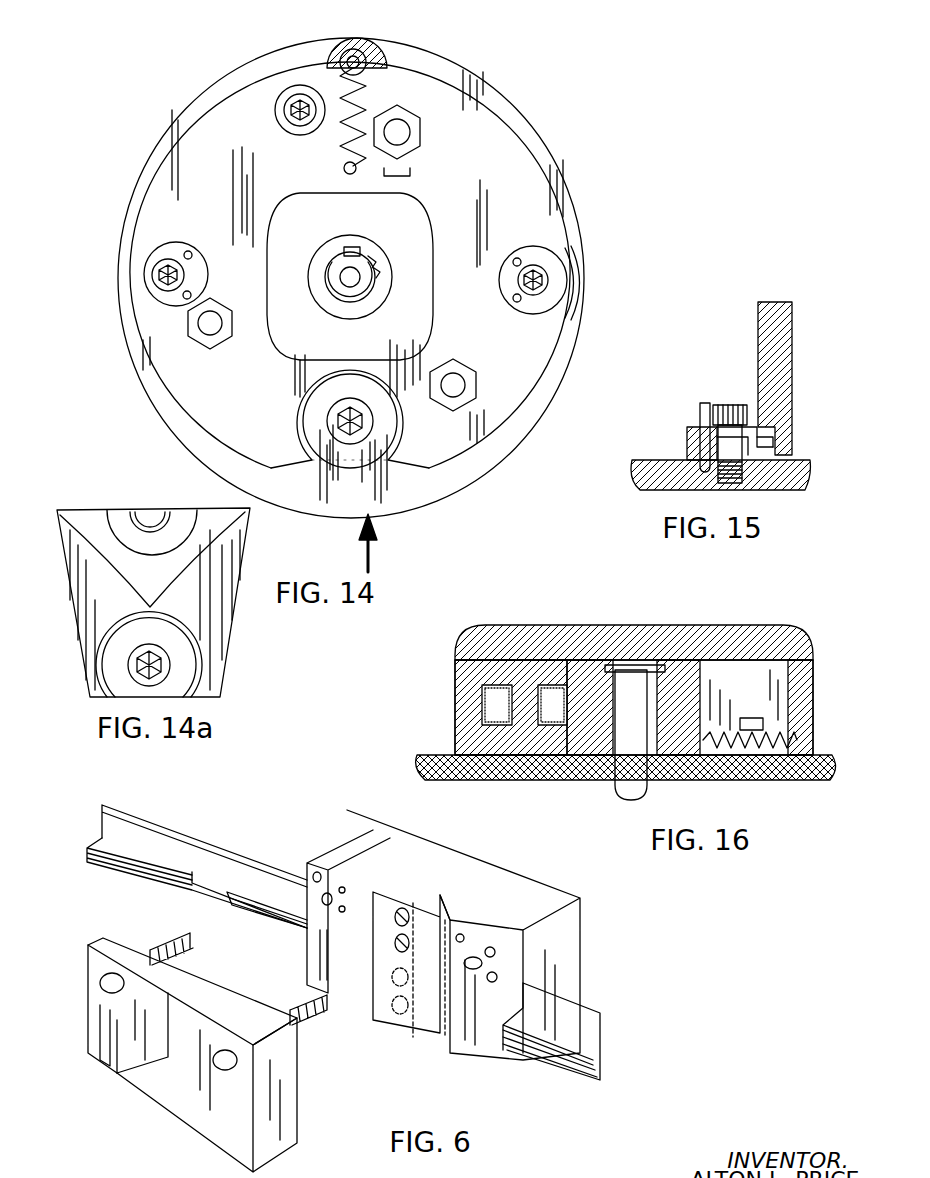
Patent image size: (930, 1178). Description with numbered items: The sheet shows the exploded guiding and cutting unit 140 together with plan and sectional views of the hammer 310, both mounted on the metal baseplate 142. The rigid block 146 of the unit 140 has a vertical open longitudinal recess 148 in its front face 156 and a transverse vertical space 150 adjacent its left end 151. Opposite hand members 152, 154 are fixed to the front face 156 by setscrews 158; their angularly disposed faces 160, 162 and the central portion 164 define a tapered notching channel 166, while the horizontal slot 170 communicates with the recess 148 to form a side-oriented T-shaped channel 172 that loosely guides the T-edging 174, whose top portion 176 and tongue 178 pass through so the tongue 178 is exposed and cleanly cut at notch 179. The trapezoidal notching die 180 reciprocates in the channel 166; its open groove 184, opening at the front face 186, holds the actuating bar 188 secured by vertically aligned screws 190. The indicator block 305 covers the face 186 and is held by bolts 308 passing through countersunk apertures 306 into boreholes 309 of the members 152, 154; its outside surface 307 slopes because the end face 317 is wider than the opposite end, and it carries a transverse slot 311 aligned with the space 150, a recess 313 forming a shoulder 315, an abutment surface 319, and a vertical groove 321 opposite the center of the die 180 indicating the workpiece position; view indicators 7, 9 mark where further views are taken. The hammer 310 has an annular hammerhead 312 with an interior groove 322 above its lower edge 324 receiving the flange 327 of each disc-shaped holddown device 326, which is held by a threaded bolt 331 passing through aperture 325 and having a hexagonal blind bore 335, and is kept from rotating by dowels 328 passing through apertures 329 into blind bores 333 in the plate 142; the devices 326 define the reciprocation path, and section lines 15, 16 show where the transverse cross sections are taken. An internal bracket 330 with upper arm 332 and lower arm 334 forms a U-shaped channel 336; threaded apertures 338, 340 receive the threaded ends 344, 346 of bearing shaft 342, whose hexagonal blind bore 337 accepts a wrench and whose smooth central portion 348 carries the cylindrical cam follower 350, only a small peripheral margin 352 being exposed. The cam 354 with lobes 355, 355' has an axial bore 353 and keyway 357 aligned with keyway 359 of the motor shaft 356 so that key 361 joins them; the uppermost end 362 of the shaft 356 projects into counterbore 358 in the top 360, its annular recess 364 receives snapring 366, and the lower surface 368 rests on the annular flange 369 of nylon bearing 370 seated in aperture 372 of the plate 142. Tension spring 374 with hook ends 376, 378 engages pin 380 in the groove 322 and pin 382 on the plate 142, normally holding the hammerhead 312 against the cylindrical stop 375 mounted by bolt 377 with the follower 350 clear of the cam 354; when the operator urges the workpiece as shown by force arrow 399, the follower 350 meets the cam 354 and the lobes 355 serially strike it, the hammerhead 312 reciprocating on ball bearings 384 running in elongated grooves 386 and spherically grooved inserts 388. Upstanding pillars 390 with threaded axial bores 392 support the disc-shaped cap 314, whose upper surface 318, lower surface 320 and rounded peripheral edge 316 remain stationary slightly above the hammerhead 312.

In FIG. 6, the guiding and cutting unit 140 is at (596, 906).
In FIG. 14, the metal baseplate 142 is at (186, 207).
In FIG. 14A, the metal baseplate 142 is at (76, 521).
In FIG. 15, the metal baseplate 142 is at (660, 476).
In FIG. 16, the metal baseplate 142 is at (430, 766).
In FIG. 6, the rigid block 146 is at (541, 896).
In FIG. 6, the open longitudinal recess 148 is at (526, 986).
In FIG. 6, the transverse vertical space 150 is at (320, 961).
In FIG. 6, the left end 151 is at (360, 831).
In FIG. 6, the opposite hand member 152 is at (328, 858).
In FIG. 6, the opposite hand member 154 is at (482, 1056).
In FIG. 6, the front face 156 is at (458, 923).
In FIG. 6, the setscrews 158 is at (338, 888).
In FIG. 6, the angularly disposed face 160 is at (365, 1006).
In FIG. 6, the angularly disposed face 162 is at (470, 1061).
In FIG. 6, the central portion 164 is at (455, 1041).
In FIG. 6, the tapered notching channel 166 is at (526, 931).
In FIG. 6, the transverse horizontal slot 170 is at (505, 1061).
In FIG. 6, the T-shaped through-channel 172 is at (525, 1071).
In FIG. 6, the T-edging 174 is at (607, 1034).
In FIG. 6, the top portion 176 is at (160, 808).
In FIG. 6, the tongue 178 is at (100, 876).
In FIG. 6, the notch 179 is at (195, 871).
In FIG. 6, the notching die 180 is at (441, 906).
In FIG. 6, the open groove 184 is at (405, 901).
In FIG. 6, the front face 186 is at (320, 939).
In FIG. 6, the actuating bar 188 is at (395, 1011).
In FIG. 6, the screws 190 is at (388, 901).
In FIG. 6, the indicator block 305 is at (280, 1150).
In FIG. 6, the countersunk apertures 306 is at (105, 978).
In FIG. 6, the outside surface 307 is at (195, 1001).
In FIG. 6, the bolts 308 is at (160, 946).
In FIG. 6, the boreholes 309 is at (318, 876).
In FIG. 14, the hammer 310 is at (515, 99).
In FIG. 16, the hammer 310 is at (699, 624).
In FIG. 6, the transverse slot 311 is at (108, 1076).
In FIG. 14, the hammerhead 312 is at (568, 226).
In FIG. 15, the hammerhead 312 is at (758, 319).
In FIG. 16, the hammerhead 312 is at (800, 651).
In FIG. 6, the recess 313 is at (185, 1121).
In FIG. 16, the cap 314 is at (560, 663).
In FIG. 6, the shoulder 315 is at (160, 1106).
In FIG. 16, the rounded peripheral edge 316 is at (458, 631).
In FIG. 6, the end face 317 is at (268, 1131).
In FIG. 16, the upper surface 318 is at (612, 663).
In FIG. 6, the abutment surface 319 is at (92, 943).
In FIG. 16, the lower surface 320 is at (761, 656).
In FIG. 6, the vertical groove 321 is at (135, 1091).
In FIG. 14, the annular groove 322 is at (378, 60).
In FIG. 15, the annular groove 322 is at (786, 430).
In FIG. 16, the annular groove 322 is at (808, 776).
In FIG. 15, the lower edge 324 is at (780, 479).
In FIG. 16, the lower edge 324 is at (500, 766).
In FIG. 15, the aperture 325 is at (756, 486).
In FIG. 14, the holddown device 326 is at (181, 251).
In FIG. 15, the holddown device 326 is at (688, 441).
In FIG. 14, the flange 327 is at (548, 262).
In FIG. 15, the flange 327 is at (775, 433).
In FIG. 14, the dowels 328 is at (192, 259).
In FIG. 15, the dowels 328 is at (703, 411).
In FIG. 15, the aperture 329 is at (700, 451).
In FIG. 14, the bracket 330 is at (315, 415).
In FIG. 14A, the bracket 330 is at (186, 678).
In FIG. 16, the bracket 330 is at (500, 679).
In FIG. 14, the threaded bolt 331 is at (165, 276).
In FIG. 15, the threaded bolt 331 is at (730, 405).
In FIG. 16, the upper arm 332 is at (548, 666).
In FIG. 15, the blind bore 333 is at (690, 483).
In FIG. 16, the lower arm 334 is at (575, 763).
In FIG. 14, the hexagonal blind bore 335 is at (168, 281).
In FIG. 16, the U-shaped channel 336 is at (470, 726).
In FIG. 14, the hexagonal blind bore 337 is at (360, 441).
In FIG. 16, the hexagonal blind bore 337 is at (520, 661).
In FIG. 16, the threaded aperture 338 is at (521, 666).
In FIG. 16, the threaded aperture 340 is at (535, 763).
In FIG. 14, the bearing shaft 342 is at (350, 437).
In FIG. 16, the bearing shaft 342 is at (535, 671).
In FIG. 16, the threaded end 344 is at (465, 669).
In FIG. 16, the threaded end 346 is at (548, 762).
In FIG. 16, the smooth central portion 348 is at (482, 701).
In FIG. 14, the cam follower 350 is at (404, 438).
In FIG. 14A, the cam follower 350 is at (198, 658).
In FIG. 16, the cam follower 350 is at (465, 719).
In FIG. 14, the peripheral margin 352 is at (300, 402).
In FIG. 14A, the peripheral margin 352 is at (196, 636).
In FIG. 16, the peripheral margin 352 is at (545, 665).
In FIG. 16, the axial bore 353 is at (633, 801).
In FIG. 14, the cam 354 is at (360, 344).
In FIG. 14A, the cam 354 is at (168, 580).
In FIG. 16, the cam 354 is at (592, 662).
In FIG. 14, the lobes 355 is at (347, 287).
In FIG. 14A, the lobes 355 is at (123, 577).
In FIG. 14, the hub plate edge 355' is at (451, 202).
In FIG. 16, the motor shaft 356 is at (650, 776).
In FIG. 14, the keyway 357 is at (380, 263).
In FIG. 16, the keyway 357 is at (750, 771).
In FIG. 14, the counterbore 358 is at (372, 258).
In FIG. 14A, the counterbore 358 is at (113, 506).
In FIG. 16, the counterbore 358 is at (655, 666).
In FIG. 14, the keyway 359 is at (335, 266).
In FIG. 16, the keyway 359 is at (755, 766).
In FIG. 16, the top 360 is at (716, 661).
In FIG. 14, the key 361 is at (350, 247).
In FIG. 16, the key 361 is at (631, 781).
In FIG. 14, the uppermost end 362 is at (340, 291).
In FIG. 14A, the uppermost end 362 is at (165, 506).
In FIG. 16, the uppermost end 362 is at (638, 666).
In FIG. 16, the annular recess 364 is at (696, 691).
In FIG. 14, the snapring 366 is at (376, 290).
In FIG. 16, the snapring 366 is at (700, 676).
In FIG. 16, the lower surface 368 is at (612, 771).
In FIG. 16, the annular flange 369 is at (735, 776).
In FIG. 16, the bearing 370 is at (695, 771).
In FIG. 16, the aperture 372 is at (700, 776).
In FIG. 14, the tension spring 374 is at (368, 96).
In FIG. 16, the tension spring 374 is at (790, 771).
In FIG. 14, the cylindrical stop 375 is at (282, 113).
In FIG. 14, the hook end 376 is at (330, 56).
In FIG. 14, the bolt 377 is at (295, 126).
In FIG. 14, the hook end 378 is at (385, 178).
In FIG. 14, the pin 380 is at (340, 69).
In FIG. 16, the pin 380 is at (770, 736).
In FIG. 14, the pin 382 is at (343, 170).
In FIG. 16, the pin 382 is at (745, 736).
In FIG. 16, the ball bearings 384 is at (455, 766).
In FIG. 16, the elongated groove 386 is at (480, 763).
In FIG. 16, the spherically grooved insert 388 is at (440, 758).
In FIG. 14, the pillars 390 is at (421, 138).
In FIG. 14, the axial bore 392 is at (410, 131).
In FIG. 14, the force arrow 399 is at (382, 541).
In FIG. 6, the section line 7 is at (402, 849).
In FIG. 6, the section line 9 is at (322, 983).
In FIG. 14, the section line 15— 15 is at (482, 277).
In FIG. 14, the section line 16— 16 is at (353, 36).